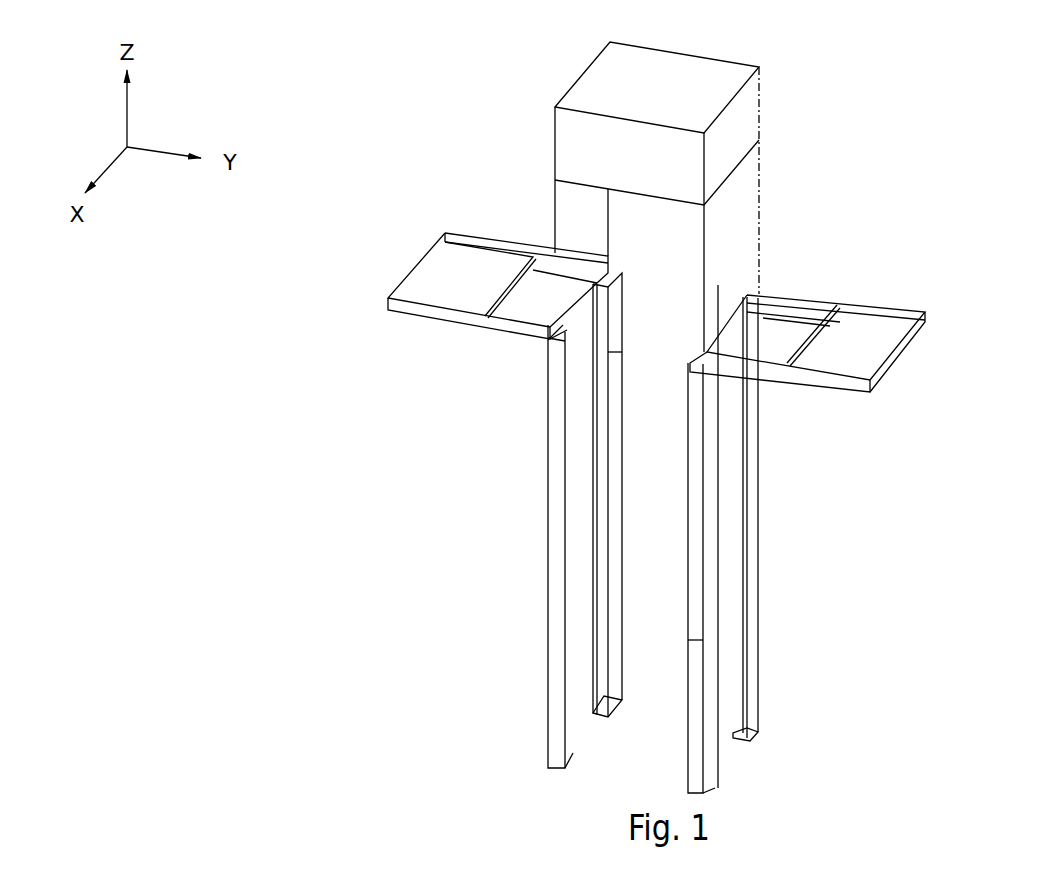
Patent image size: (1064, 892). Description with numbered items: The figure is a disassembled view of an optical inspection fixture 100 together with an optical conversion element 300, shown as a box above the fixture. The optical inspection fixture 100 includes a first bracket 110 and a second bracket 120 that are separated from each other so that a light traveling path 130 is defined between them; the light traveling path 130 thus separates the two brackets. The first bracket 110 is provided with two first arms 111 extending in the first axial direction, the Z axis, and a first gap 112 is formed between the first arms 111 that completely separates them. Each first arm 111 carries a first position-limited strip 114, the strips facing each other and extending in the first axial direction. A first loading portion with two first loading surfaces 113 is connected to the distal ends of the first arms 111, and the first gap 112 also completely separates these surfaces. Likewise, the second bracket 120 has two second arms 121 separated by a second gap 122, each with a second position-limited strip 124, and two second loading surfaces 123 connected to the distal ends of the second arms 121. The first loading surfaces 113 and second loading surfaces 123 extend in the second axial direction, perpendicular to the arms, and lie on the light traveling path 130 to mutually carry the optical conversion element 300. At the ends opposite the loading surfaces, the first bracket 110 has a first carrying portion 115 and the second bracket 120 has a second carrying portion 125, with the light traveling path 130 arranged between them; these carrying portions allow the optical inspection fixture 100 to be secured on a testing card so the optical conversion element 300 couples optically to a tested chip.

The optical inspection fixture 100 is at (298, 61).
The first bracket 110 is at (447, 230).
The first arms 111 is at (557, 338).
The first gap 112 is at (577, 455).
The first loading surfaces 113 is at (565, 762).
The first position-limited strip 114 is at (560, 387).
The first carrying portion 115 is at (435, 273).
The second bracket 120 is at (910, 305).
The second arms 121 is at (710, 433).
The second gap 122 is at (731, 547).
The second loading surfaces 123 is at (700, 785).
The second position-limited strip 124 is at (745, 608).
The second carrying portion 125 is at (875, 360).
The light traveling path 130 is at (690, 281).
The optical conversion element 300 is at (745, 118).